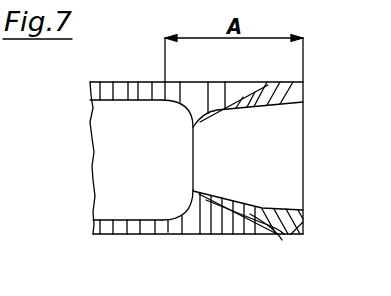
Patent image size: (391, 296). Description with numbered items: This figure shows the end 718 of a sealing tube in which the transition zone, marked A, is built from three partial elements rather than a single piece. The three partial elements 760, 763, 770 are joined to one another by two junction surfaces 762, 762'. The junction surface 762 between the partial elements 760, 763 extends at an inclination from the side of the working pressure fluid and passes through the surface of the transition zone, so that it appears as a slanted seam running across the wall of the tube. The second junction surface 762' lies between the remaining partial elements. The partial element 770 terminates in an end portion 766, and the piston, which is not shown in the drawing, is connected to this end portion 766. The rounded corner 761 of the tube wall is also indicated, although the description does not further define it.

The end of the sealing tube 718 is at (118, 92).
The rounded corner of inner wall 761 is at (190, 107).
The partial element 770 is at (268, 123).
The end portion 766 is at (303, 156).
The junction surface 762' is at (282, 193).
The partial element 763 is at (292, 223).
The partial element 760 is at (217, 221).
The junction surface 762 is at (248, 237).